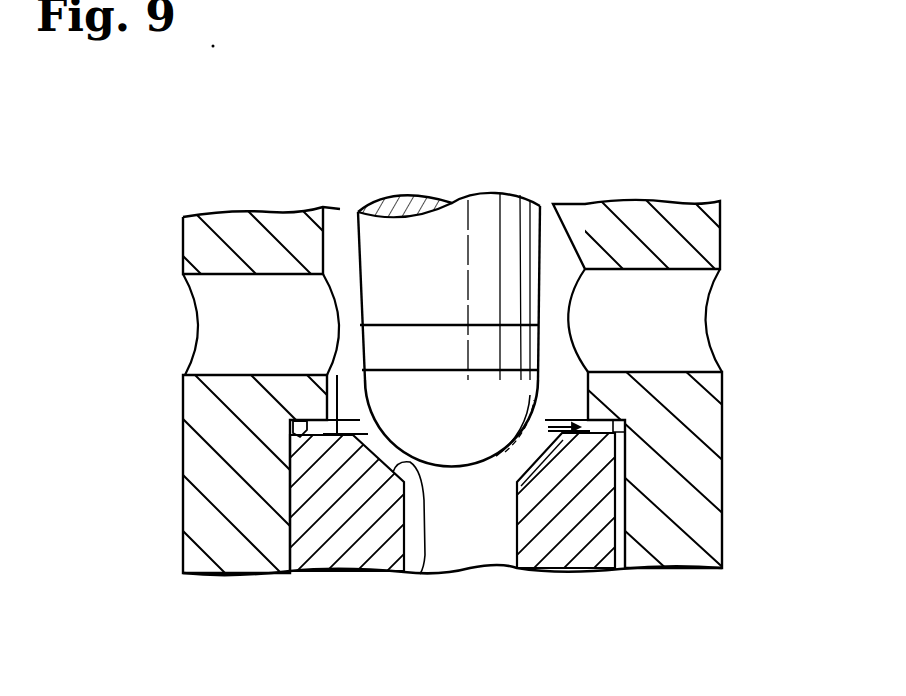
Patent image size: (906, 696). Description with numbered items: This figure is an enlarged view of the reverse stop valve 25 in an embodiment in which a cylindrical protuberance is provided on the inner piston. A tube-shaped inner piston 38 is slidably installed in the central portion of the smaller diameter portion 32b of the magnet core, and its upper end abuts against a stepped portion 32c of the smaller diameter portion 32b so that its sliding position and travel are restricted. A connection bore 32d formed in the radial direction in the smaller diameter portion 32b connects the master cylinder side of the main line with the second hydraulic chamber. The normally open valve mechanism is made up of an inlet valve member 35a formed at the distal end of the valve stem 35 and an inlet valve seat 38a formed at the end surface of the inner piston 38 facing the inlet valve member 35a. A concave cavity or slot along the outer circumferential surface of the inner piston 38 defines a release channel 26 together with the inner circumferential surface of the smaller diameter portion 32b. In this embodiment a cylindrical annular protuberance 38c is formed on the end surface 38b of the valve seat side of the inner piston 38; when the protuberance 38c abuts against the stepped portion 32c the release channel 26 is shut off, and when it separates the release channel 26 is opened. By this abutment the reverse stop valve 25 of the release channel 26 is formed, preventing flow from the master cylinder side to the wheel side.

The reverse stop valve 25 is at (548, 422).
The release channel 26 is at (622, 513).
The smaller diameter portion 32b is at (672, 558).
The stepped portion 32c is at (640, 424).
The connection bore 32d is at (705, 330).
The valve stem 35 is at (468, 218).
The inlet valve member 35a is at (455, 443).
The inner piston 38 is at (317, 548).
The inlet valve seat 38a is at (420, 574).
The end surface of the valve seat side 38b is at (327, 372).
The cylindrical annular protuberance 38c is at (290, 421).